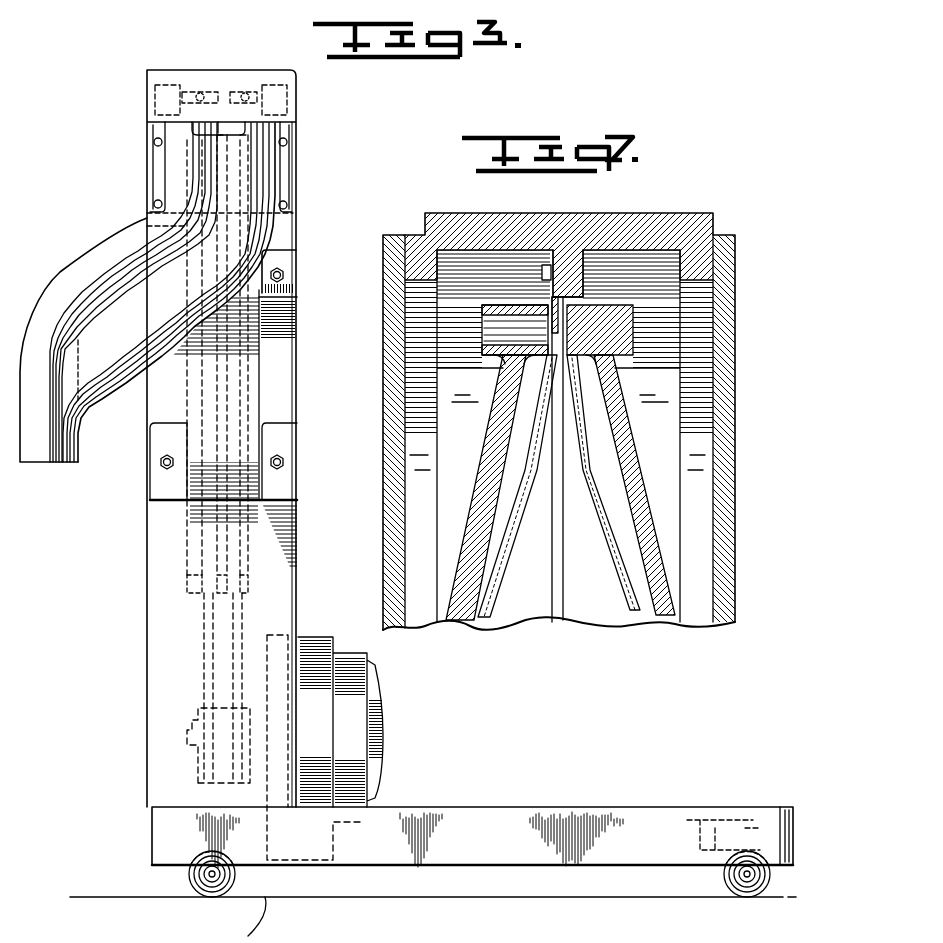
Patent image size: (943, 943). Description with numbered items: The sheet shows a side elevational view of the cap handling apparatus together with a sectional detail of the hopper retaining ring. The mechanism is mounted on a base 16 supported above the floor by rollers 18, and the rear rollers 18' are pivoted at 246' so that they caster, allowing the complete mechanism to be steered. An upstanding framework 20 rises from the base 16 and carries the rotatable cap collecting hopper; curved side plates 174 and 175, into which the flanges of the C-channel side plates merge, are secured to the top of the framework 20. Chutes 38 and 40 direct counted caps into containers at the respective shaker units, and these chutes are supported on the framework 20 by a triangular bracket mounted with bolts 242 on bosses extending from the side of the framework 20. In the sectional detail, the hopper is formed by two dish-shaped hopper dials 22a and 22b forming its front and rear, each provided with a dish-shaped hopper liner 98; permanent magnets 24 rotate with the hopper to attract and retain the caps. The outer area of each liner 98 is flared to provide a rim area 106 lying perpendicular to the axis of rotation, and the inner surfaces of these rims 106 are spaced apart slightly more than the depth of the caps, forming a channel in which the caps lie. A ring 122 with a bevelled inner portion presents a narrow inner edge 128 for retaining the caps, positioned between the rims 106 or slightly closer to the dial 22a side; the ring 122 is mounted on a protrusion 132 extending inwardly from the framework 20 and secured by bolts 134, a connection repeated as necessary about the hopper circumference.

In FIG. 3, the base 16 is at (458, 806).
In FIG. 3, the rollers 18 is at (174, 874).
In FIG. 3, the rear rollers 18' is at (712, 874).
In FIG. 3, the pivot 246' is at (730, 802).
In FIG. 3, the chute 38 is at (61, 273).
In FIG. 3, the chute 40 is at (107, 390).
In FIG. 3, the curved side plate 174 is at (152, 188).
In FIG. 3, the curved side plate 175 is at (291, 177).
In FIG. 3, the bolts 242 is at (286, 275).
In FIG. 7, the upstanding framework 20 is at (559, 402).
In FIG. 7, the hopper dial 22a is at (497, 406).
In FIG. 7, the hopper dial 22b is at (626, 416).
In FIG. 7, the permanent magnets 24 is at (482, 327).
In FIG. 7, the hopper liners 98 is at (500, 572).
In FIG. 7, the rim area 106 is at (572, 365).
In FIG. 7, the ring 122 is at (585, 300).
In FIG. 7, the inner edge 128 is at (556, 340).
In FIG. 7, the protrusion 132 is at (556, 268).
In FIG. 7, the bolts 134 is at (540, 272).